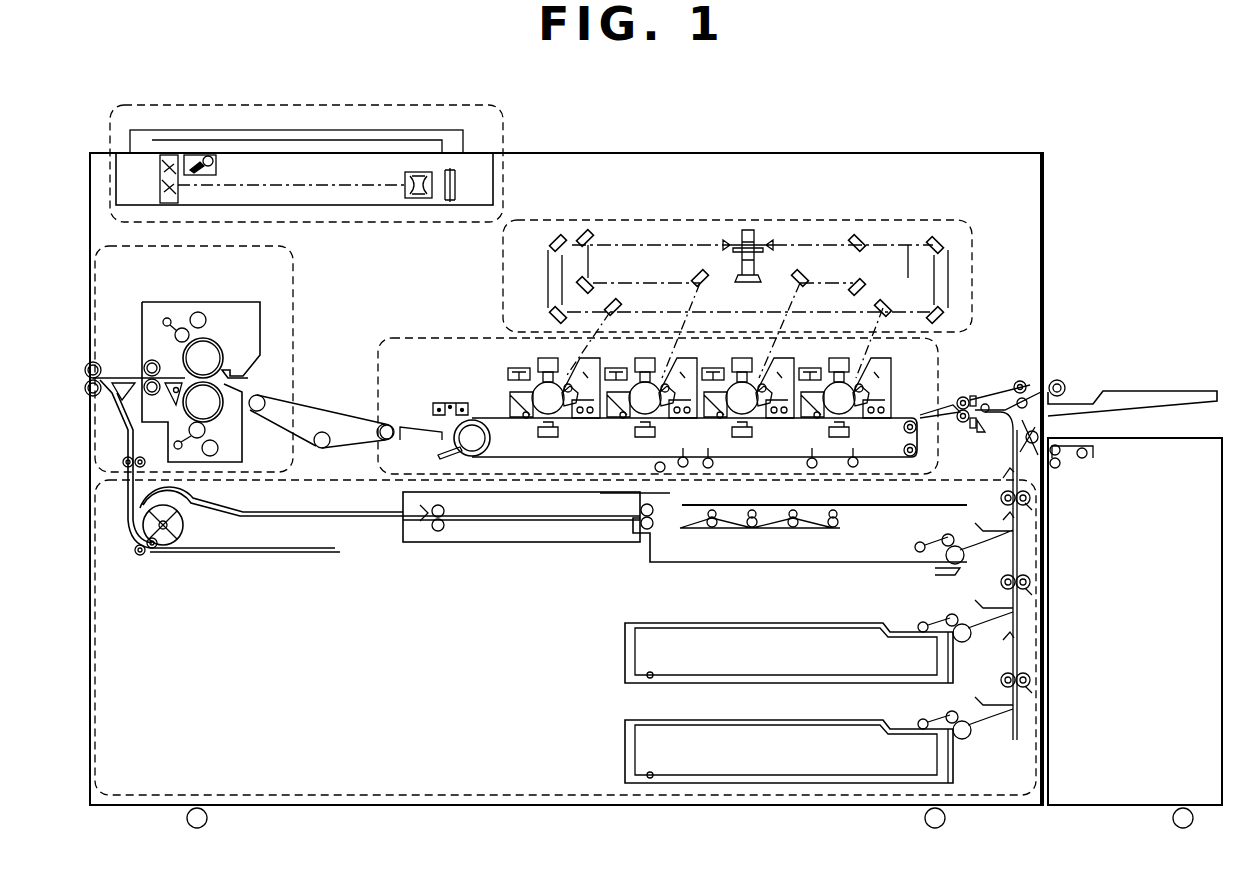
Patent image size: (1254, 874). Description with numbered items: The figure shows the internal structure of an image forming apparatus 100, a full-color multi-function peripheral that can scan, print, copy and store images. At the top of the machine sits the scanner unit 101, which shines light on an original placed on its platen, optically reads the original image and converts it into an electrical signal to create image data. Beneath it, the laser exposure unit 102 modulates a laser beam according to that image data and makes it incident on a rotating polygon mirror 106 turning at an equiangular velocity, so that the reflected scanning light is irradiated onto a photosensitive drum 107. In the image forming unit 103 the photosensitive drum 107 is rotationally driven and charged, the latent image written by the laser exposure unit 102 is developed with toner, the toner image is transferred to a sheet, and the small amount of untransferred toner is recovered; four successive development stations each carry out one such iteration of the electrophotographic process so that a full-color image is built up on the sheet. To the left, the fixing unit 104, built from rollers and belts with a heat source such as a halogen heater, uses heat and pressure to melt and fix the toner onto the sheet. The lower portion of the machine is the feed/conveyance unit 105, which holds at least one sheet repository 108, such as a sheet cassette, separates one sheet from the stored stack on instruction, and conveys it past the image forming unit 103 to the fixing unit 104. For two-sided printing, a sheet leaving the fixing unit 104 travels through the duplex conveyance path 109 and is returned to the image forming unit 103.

The image forming apparatus 100 is at (66, 103).
The scanner unit 101 is at (258, 105).
The laser exposure unit 102 is at (548, 220).
The image forming unit 103 is at (412, 338).
The fixing unit 104 is at (296, 266).
The feed/conveyance unit 105 is at (258, 800).
The rotating polygon mirror 106 is at (748, 230).
The photosensitive drum 107 is at (542, 400).
The sheet repository 108 is at (723, 635).
The duplex conveyance path 109 is at (460, 545).